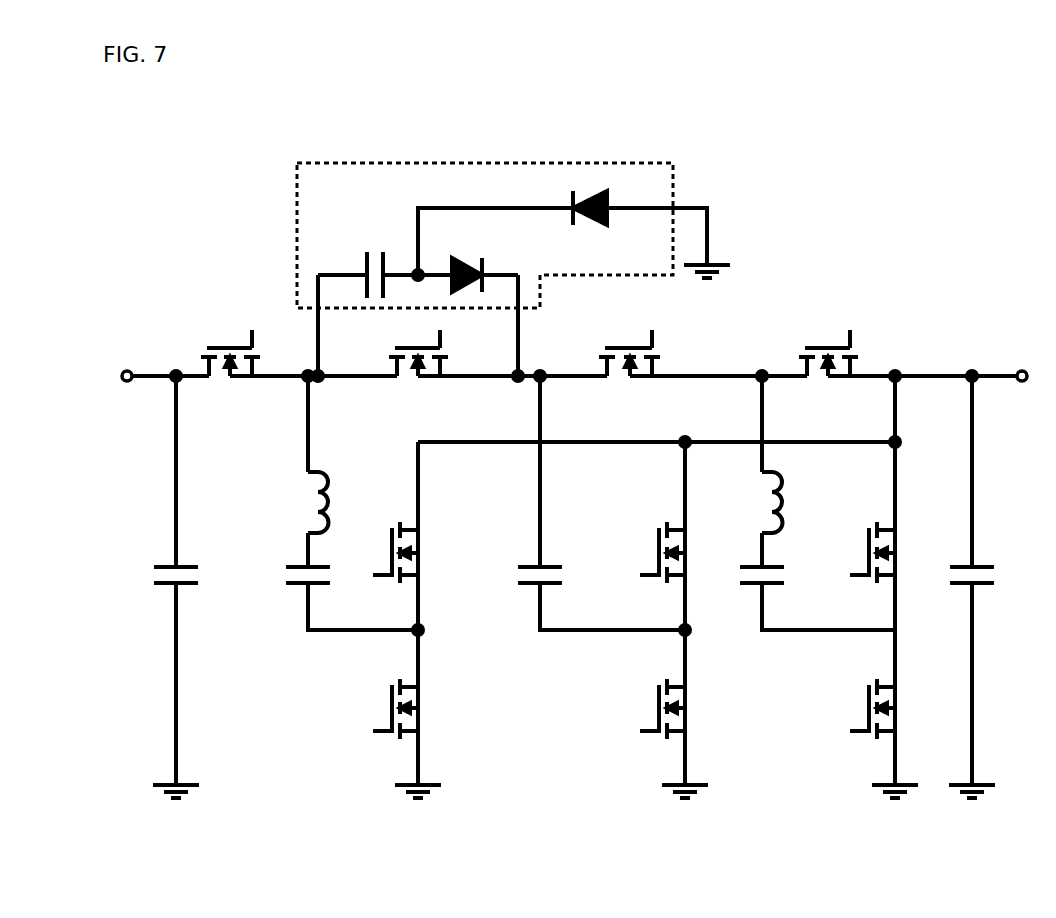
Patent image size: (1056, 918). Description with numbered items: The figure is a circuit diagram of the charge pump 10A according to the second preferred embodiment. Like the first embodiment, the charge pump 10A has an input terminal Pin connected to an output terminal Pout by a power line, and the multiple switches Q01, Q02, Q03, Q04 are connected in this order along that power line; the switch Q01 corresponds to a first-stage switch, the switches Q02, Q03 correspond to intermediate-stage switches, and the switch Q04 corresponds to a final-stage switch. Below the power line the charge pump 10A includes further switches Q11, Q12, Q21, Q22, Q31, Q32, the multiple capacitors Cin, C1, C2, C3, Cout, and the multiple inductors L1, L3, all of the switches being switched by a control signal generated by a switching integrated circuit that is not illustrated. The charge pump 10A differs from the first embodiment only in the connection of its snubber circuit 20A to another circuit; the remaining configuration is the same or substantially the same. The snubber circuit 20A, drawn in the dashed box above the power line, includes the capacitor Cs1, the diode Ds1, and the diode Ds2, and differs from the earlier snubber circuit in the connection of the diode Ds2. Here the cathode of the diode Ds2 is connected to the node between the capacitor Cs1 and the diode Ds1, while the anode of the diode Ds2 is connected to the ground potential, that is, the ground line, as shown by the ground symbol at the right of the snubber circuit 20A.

The charge pump 10A is at (184, 169).
The snubber circuit 20A is at (695, 170).
The input terminal Pin is at (143, 363).
The output terminal Pout is at (1025, 363).
The switch Q01 is at (219, 352).
The switch Q02 is at (407, 352).
The switch Q03 is at (618, 352).
The switch Q04 is at (817, 352).
The switch Q11 is at (392, 536).
The switch Q12 is at (393, 714).
The switch Q21 is at (661, 536).
The switch Q22 is at (659, 714).
The switch Q31 is at (871, 500).
The switch Q32 is at (869, 714).
The capacitor Cin is at (187, 587).
The capacitor Cout is at (988, 584).
The capacitor C1 is at (348, 601).
The capacitor C2 is at (595, 503).
The capacitor C3 is at (811, 598).
The inductor L1 is at (325, 469).
The inductor L3 is at (780, 469).
The capacitor Cs1 is at (368, 304).
The diode Ds1 is at (470, 307).
The diode Ds2 is at (574, 234).